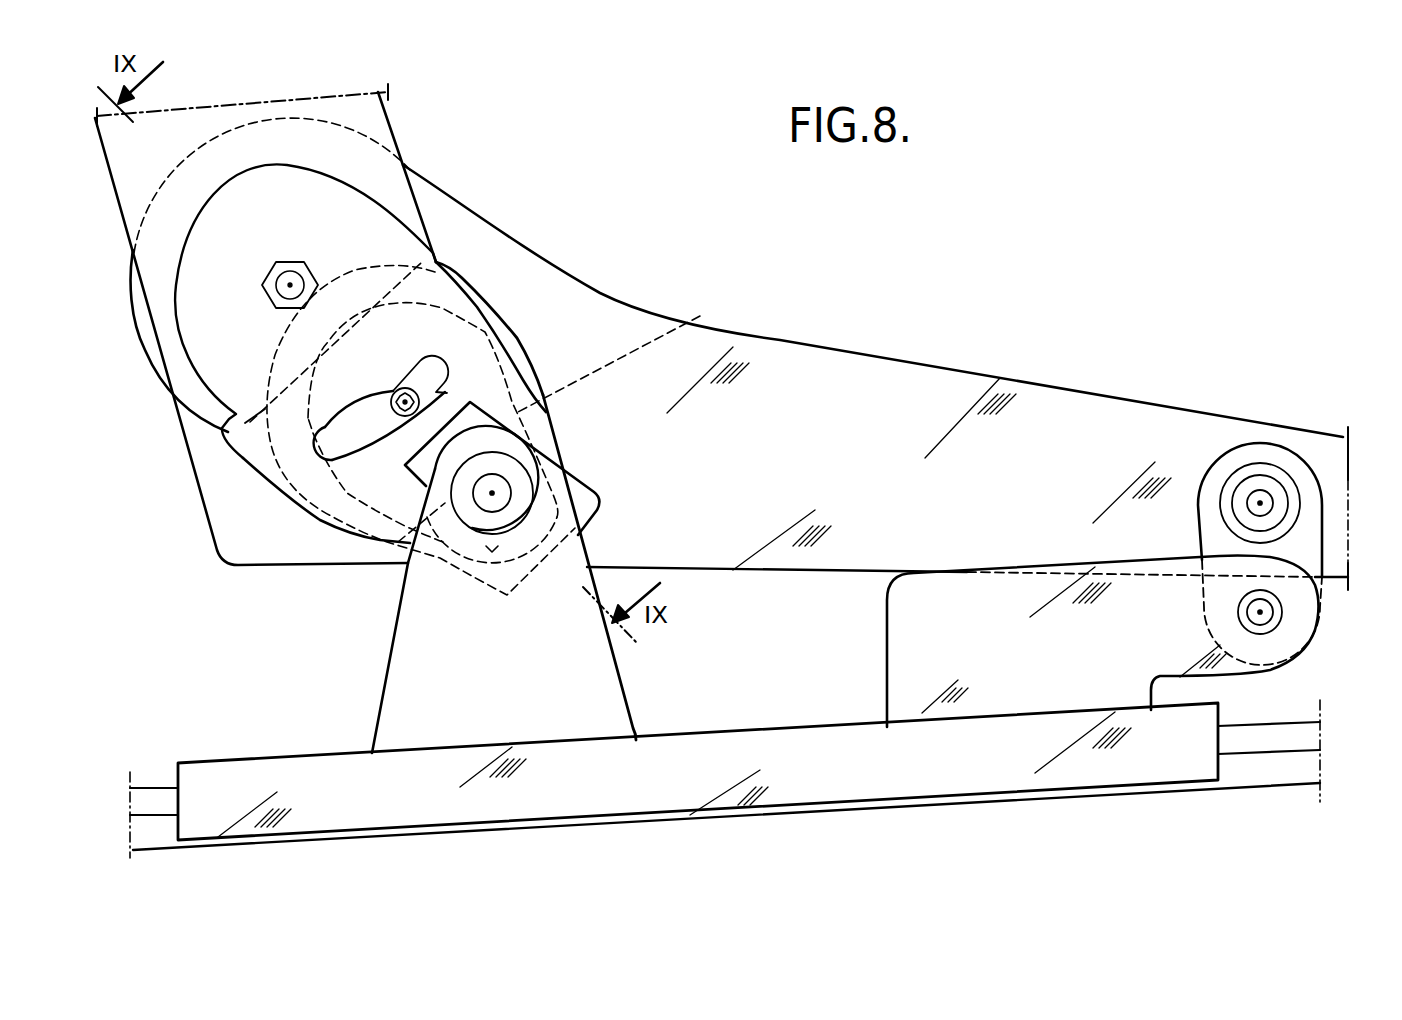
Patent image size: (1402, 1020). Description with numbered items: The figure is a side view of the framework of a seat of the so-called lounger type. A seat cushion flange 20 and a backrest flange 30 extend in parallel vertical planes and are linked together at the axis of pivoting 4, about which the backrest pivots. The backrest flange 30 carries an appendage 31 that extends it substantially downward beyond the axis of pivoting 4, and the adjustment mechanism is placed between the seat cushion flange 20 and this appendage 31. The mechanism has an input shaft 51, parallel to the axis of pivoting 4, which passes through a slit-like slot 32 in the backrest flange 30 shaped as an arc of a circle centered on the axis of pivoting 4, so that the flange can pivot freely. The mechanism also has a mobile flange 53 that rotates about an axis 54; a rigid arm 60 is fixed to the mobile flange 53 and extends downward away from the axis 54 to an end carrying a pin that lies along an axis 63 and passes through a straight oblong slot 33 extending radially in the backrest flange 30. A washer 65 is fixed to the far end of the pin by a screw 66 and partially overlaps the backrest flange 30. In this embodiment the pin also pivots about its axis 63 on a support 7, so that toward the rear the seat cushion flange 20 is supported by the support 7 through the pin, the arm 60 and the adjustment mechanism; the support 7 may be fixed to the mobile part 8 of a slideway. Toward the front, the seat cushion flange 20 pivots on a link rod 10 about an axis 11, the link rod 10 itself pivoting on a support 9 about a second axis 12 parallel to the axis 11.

The axis of pivoting 4 is at (290, 284).
The support 7 is at (415, 694).
The mobile part of a slideway 8 is at (806, 766).
The support 9 is at (938, 653).
The link rod 10 is at (1300, 535).
The axis 11 is at (1262, 504).
The second axis 12 is at (1262, 612).
The seat cushion flange 20 is at (838, 390).
The backrest flange 30 is at (357, 112).
The appendage 31 is at (267, 460).
The slit-like slot 32 is at (447, 393).
The straight oblong slot 33 is at (475, 415).
The input shaft 51 is at (395, 408).
The mobile flange 53 is at (487, 305).
The axis 54 is at (403, 412).
The rigid arm 60 is at (700, 316).
The axis 63 is at (505, 500).
The washer 65 is at (492, 494).
The screw 66 is at (497, 492).